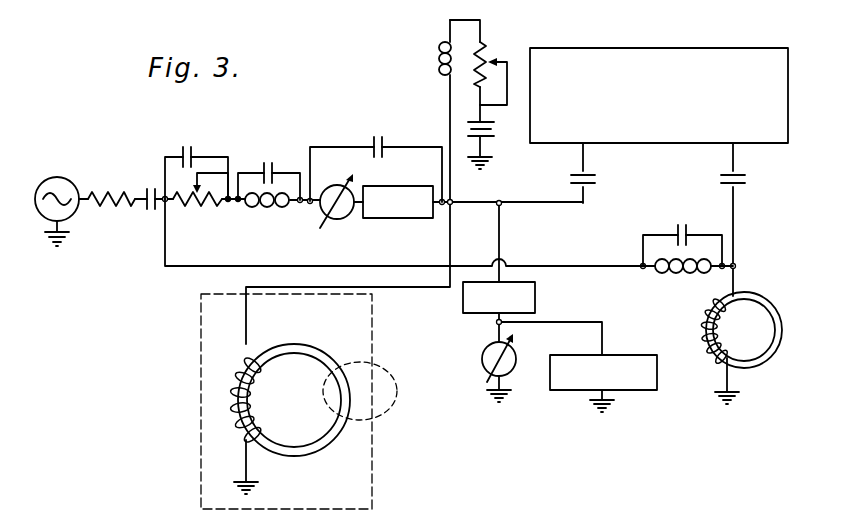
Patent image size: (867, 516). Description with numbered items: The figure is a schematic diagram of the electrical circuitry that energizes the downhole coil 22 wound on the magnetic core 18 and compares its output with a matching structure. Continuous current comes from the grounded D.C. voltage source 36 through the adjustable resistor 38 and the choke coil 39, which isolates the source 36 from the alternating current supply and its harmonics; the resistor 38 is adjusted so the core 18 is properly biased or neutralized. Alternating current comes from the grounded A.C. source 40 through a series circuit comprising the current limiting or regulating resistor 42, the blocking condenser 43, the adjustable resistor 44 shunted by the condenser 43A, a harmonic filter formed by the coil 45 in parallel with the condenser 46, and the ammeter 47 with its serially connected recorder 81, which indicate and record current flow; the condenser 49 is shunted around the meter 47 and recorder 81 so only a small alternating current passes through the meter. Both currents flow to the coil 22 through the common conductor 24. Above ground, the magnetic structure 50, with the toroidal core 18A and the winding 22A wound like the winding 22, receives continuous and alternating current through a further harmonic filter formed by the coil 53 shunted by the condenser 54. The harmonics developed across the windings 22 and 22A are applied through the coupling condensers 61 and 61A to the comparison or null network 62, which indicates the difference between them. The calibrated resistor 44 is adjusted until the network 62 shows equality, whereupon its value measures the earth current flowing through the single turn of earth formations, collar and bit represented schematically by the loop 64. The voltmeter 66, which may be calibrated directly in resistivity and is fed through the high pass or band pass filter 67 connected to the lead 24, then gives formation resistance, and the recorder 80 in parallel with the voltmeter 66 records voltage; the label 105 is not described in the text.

The magnetic core 18 is at (294, 344).
The toroidal core 18A is at (769, 355).
The coil 22 is at (242, 395).
The winding 22A is at (706, 334).
The common conductor 24 is at (452, 243).
The D.C. voltage source 36 is at (495, 130).
The adjustable resistor 38 is at (478, 46).
The choke coil 39 is at (438, 55).
The A.C. source 40 is at (78, 214).
The current limiting or regulating resistor 42 is at (107, 194).
The blocking condenser 43 is at (146, 210).
The condenser 43A is at (187, 146).
The adjustable resistor 44 is at (203, 206).
The coil 45 is at (267, 208).
The condenser 46 is at (268, 162).
The ammeter 47 is at (337, 220).
The condenser 49 is at (378, 137).
The magnetic structure 50 is at (734, 325).
The coil 53 is at (684, 276).
The condenser 54 is at (682, 224).
The coupling condenser 61 is at (598, 179).
The coupling condenser 61A is at (748, 179).
The comparison or null network 62 is at (722, 48).
The loop 64 is at (408, 350).
The voltmeter 66 is at (482, 360).
The high pass or band pass filter 67 is at (462, 300).
The recorder 80 is at (622, 355).
The recorder 81 is at (402, 219).
The reference numeral 105 is at (86, 504).